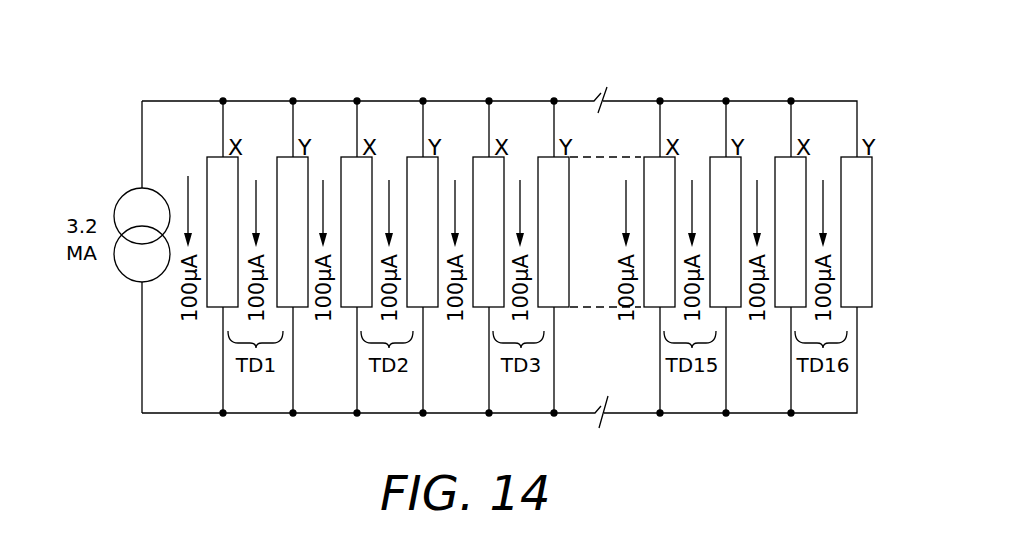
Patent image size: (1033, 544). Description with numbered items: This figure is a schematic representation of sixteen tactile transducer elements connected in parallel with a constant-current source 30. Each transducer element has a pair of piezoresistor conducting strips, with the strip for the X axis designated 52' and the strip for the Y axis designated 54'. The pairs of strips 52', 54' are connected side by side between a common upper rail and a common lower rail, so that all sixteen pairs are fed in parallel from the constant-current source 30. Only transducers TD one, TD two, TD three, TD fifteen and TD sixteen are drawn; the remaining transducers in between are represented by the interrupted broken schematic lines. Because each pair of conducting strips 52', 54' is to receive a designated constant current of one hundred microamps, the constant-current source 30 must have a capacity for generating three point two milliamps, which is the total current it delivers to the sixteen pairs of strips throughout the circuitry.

The constant-current source 30 is at (160, 189).
The X-axis piezoresistor conducting strip 52' is at (492, 257).
The Y-axis piezoresistor conducting strip 54' is at (559, 257).